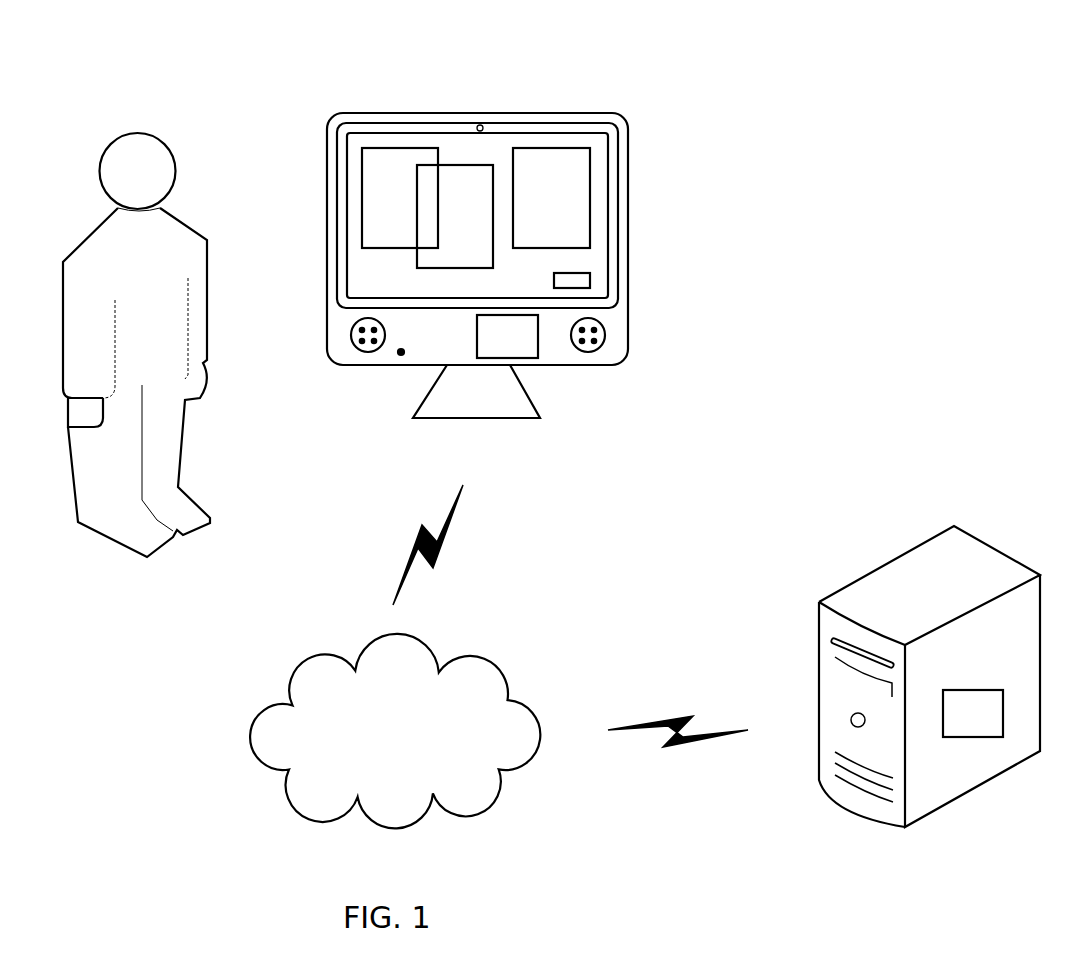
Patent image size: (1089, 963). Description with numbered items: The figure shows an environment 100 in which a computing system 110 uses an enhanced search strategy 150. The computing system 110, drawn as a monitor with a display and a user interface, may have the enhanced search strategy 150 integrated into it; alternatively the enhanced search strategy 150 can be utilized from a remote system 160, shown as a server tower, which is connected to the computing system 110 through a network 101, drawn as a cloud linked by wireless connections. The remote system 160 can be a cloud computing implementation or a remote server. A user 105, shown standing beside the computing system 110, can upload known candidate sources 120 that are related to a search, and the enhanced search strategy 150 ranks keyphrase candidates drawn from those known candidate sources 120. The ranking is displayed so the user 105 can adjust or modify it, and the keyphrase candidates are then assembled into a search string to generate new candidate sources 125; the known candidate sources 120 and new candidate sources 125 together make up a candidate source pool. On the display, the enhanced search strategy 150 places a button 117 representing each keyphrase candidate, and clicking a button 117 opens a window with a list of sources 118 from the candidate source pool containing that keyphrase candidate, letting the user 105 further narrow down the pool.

The environment 100 is at (906, 93).
The network 101 is at (418, 760).
The user 105 is at (161, 105).
The computing system 110 is at (512, 213).
The button 117 is at (604, 282).
The list of sources 118 is at (604, 197).
The known candidate sources 120 is at (396, 160).
The new candidate sources 125 is at (477, 178).
The enhanced search strategy 150 is at (531, 352).
The remote system 160 is at (922, 492).